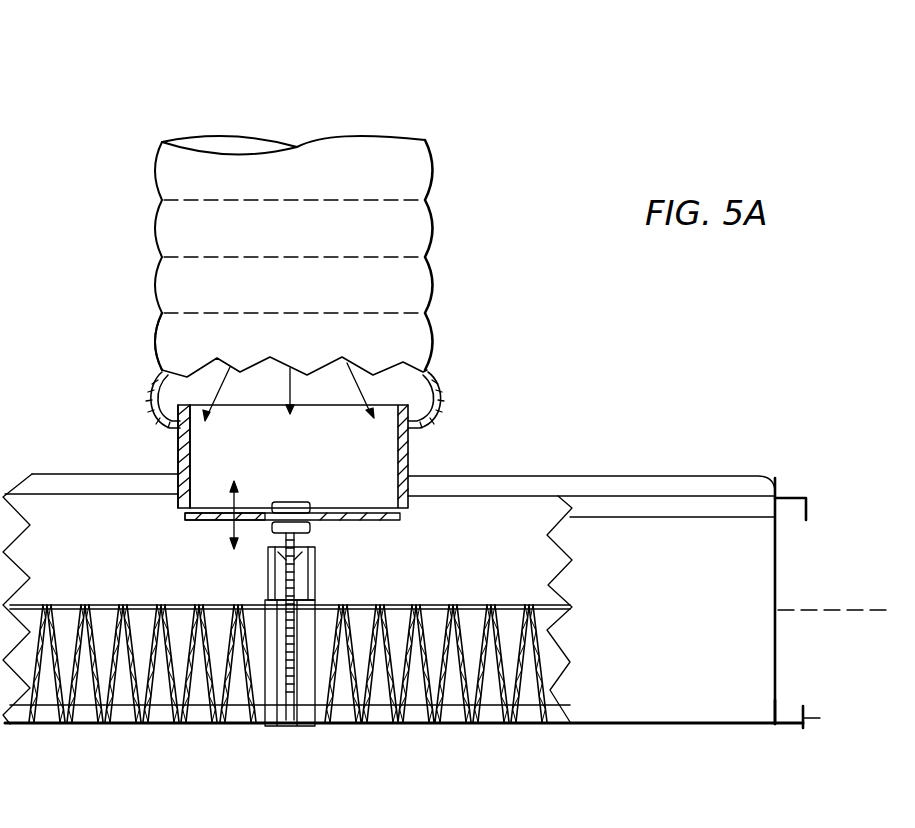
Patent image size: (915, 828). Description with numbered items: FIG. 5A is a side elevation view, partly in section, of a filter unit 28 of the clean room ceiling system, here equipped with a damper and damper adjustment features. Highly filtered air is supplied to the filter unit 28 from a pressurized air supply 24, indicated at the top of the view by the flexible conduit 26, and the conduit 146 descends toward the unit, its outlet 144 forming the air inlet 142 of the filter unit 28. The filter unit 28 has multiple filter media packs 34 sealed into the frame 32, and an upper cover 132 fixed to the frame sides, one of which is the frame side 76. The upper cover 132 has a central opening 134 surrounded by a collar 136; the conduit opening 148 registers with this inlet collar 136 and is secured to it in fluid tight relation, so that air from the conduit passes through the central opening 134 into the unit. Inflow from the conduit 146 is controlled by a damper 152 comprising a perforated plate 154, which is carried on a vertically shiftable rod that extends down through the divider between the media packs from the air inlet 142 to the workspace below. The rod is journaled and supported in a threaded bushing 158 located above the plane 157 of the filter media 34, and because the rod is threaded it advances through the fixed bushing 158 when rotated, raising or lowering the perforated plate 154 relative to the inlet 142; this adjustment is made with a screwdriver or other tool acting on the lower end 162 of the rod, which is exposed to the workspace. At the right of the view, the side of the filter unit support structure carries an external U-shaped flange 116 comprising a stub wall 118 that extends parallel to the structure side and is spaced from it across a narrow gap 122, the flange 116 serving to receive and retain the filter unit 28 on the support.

The air supply 24 is at (276, 112).
The flexible conduit 26 is at (413, 228).
The flexible conduit 146 is at (437, 291).
The air inlet 142 is at (435, 340).
The outlet 144 is at (430, 403).
The central opening 134 is at (402, 460).
The collar 136 is at (176, 453).
The conduit opening 148 is at (346, 404).
The upper cover 132 is at (60, 474).
The frame 32 is at (513, 517).
The damper 152 is at (395, 521).
The perforated plate 154 is at (205, 520).
The bushing 158 is at (298, 547).
The lower end of the rod 162 is at (296, 724).
The filter media packs 34 is at (412, 724).
The filter unit 28 is at (746, 444).
The frame side 76 is at (716, 587).
The plane of the filter media 157 is at (830, 612).
The gap 122 is at (785, 718).
The stub wall 118 is at (807, 718).
The external U-shaped flange 116 is at (788, 730).